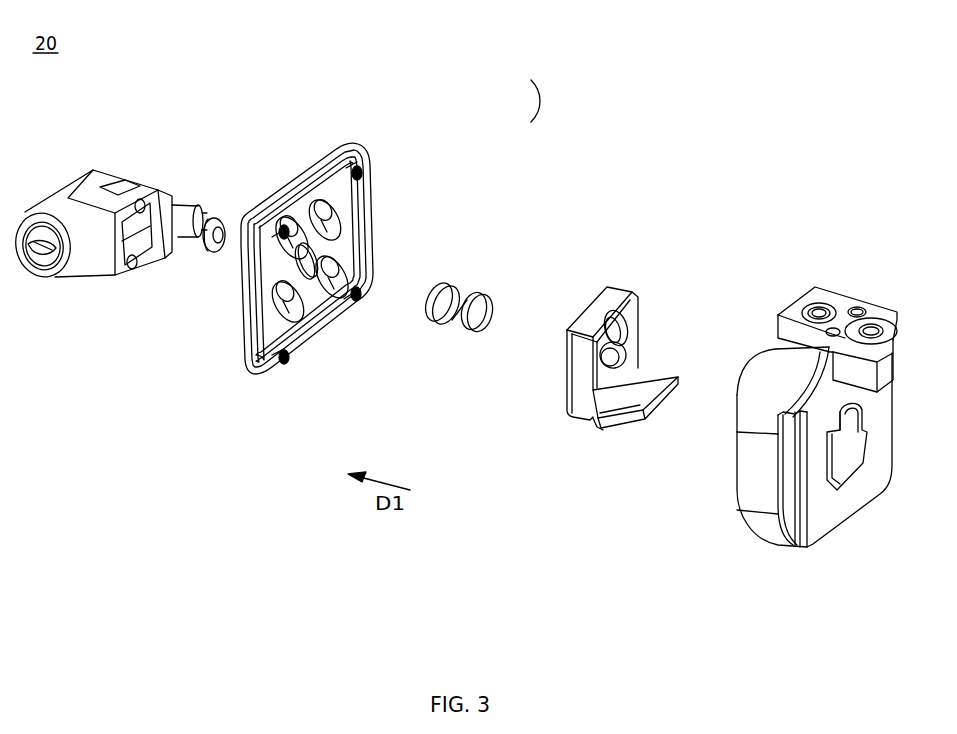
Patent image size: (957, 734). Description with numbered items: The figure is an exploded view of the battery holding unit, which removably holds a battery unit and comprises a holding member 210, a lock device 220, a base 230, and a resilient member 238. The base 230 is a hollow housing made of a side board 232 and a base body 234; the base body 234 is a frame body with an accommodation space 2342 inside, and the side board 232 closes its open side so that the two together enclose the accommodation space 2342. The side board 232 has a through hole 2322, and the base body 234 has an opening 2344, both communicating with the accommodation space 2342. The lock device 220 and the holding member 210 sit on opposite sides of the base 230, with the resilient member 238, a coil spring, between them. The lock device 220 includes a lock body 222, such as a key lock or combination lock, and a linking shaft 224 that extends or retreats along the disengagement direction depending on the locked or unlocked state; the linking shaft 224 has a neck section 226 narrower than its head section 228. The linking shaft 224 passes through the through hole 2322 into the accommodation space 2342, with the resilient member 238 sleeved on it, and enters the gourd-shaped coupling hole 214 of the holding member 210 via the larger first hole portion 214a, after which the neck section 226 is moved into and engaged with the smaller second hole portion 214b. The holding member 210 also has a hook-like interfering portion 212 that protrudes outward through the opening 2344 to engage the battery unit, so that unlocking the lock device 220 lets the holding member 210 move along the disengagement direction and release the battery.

The holding member 210 is at (640, 363).
The interfering portion 212 is at (658, 414).
The coupling hole 214 is at (658, 285).
The first hole portion 214a is at (627, 338).
The second hole portion 214b is at (633, 350).
The lock device 220 is at (94, 182).
The lock body 222 is at (53, 280).
The linking shaft 224 is at (199, 172).
The neck section 226 is at (196, 218).
The head section 228 is at (218, 222).
The base 230 is at (551, 101).
The side board 232 is at (383, 250).
The through hole 2322 is at (309, 274).
The base body 234 is at (708, 327).
The accommodation space 2342 is at (742, 368).
The opening 2344 is at (848, 448).
The resilient member 238 is at (482, 337).